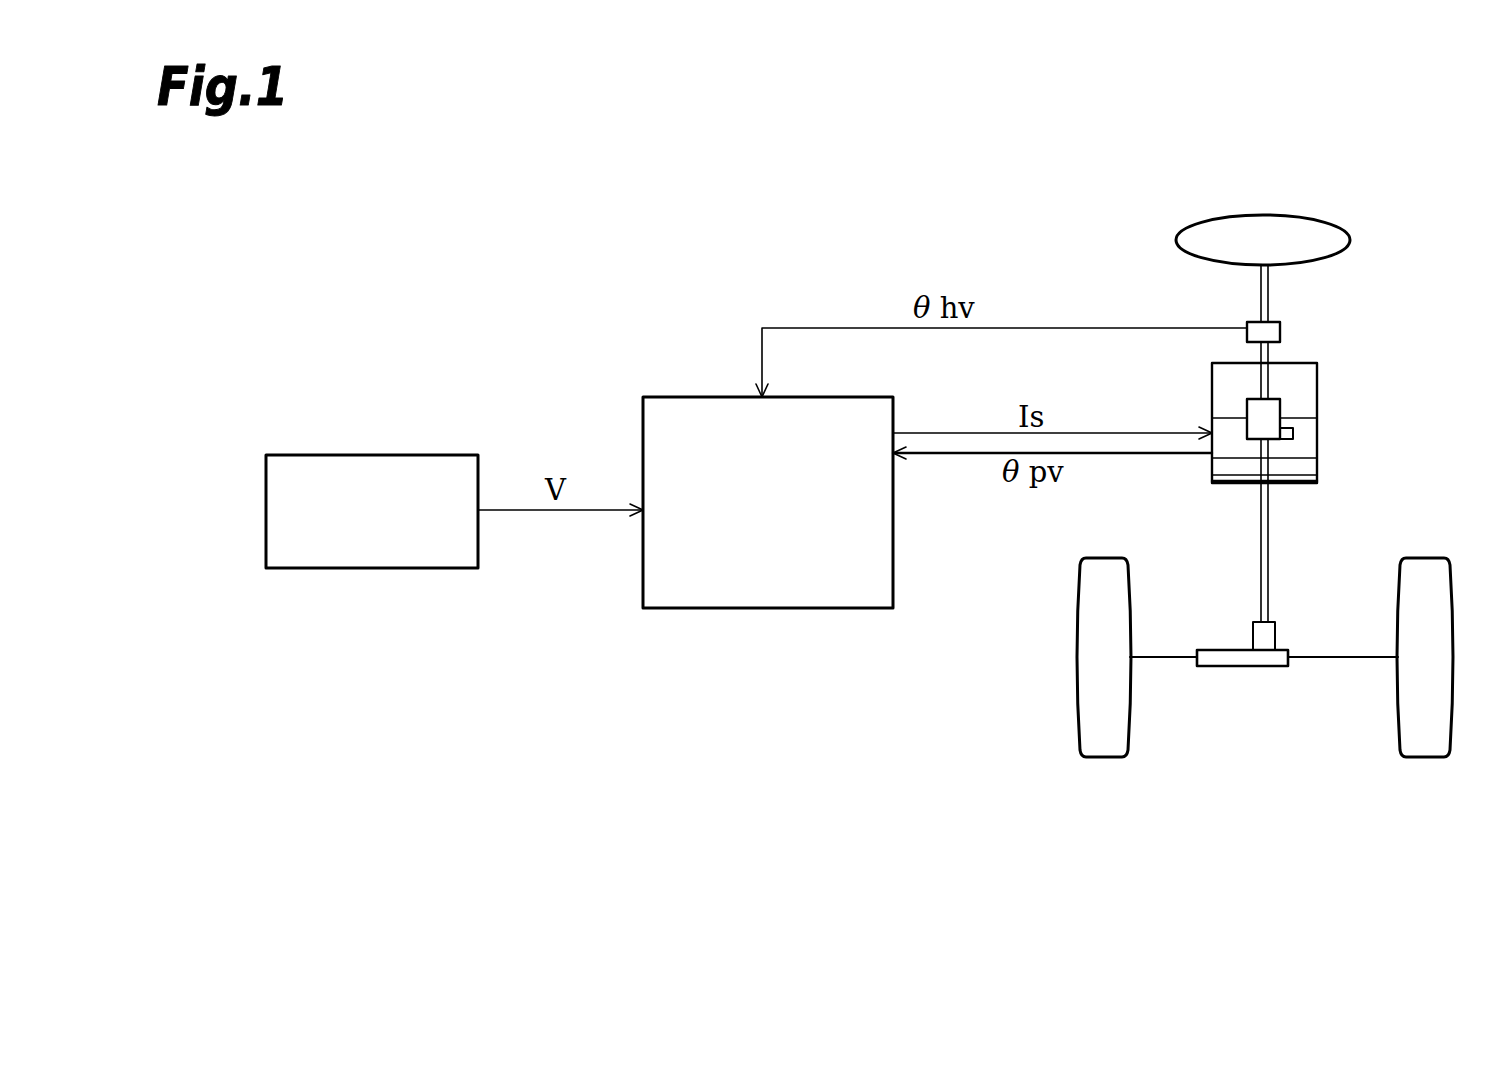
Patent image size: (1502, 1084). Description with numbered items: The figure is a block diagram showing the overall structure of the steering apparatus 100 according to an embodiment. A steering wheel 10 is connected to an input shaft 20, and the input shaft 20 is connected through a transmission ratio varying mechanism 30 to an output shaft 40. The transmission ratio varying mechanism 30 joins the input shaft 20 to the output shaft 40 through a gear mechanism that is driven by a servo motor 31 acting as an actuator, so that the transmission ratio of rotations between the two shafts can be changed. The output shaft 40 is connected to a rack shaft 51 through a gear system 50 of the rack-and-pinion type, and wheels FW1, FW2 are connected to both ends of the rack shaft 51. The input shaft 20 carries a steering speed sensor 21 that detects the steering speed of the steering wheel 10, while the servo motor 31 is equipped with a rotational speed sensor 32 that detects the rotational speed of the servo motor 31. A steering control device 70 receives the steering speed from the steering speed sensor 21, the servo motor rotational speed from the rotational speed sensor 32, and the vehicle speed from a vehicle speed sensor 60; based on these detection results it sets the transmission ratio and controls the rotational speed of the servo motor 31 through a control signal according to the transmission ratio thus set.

The steering apparatus 100 is at (777, 202).
The steering wheel 10 is at (1317, 217).
The input shaft 20 is at (1268, 288).
The steering speed sensor 21 is at (1280, 333).
The transmission ratio varying mechanism 30 is at (1317, 377).
The servo motor 31 is at (1247, 400).
The rotational speed sensor 32 is at (1293, 433).
The output shaft 40 is at (1268, 578).
The gear system 50 is at (1232, 668).
The rack shaft 51 is at (1332, 658).
The vehicle speed sensor 60 is at (373, 455).
The steering control device 70 is at (893, 578).
The wheel FW1 is at (1100, 758).
The wheel FW2 is at (1428, 758).